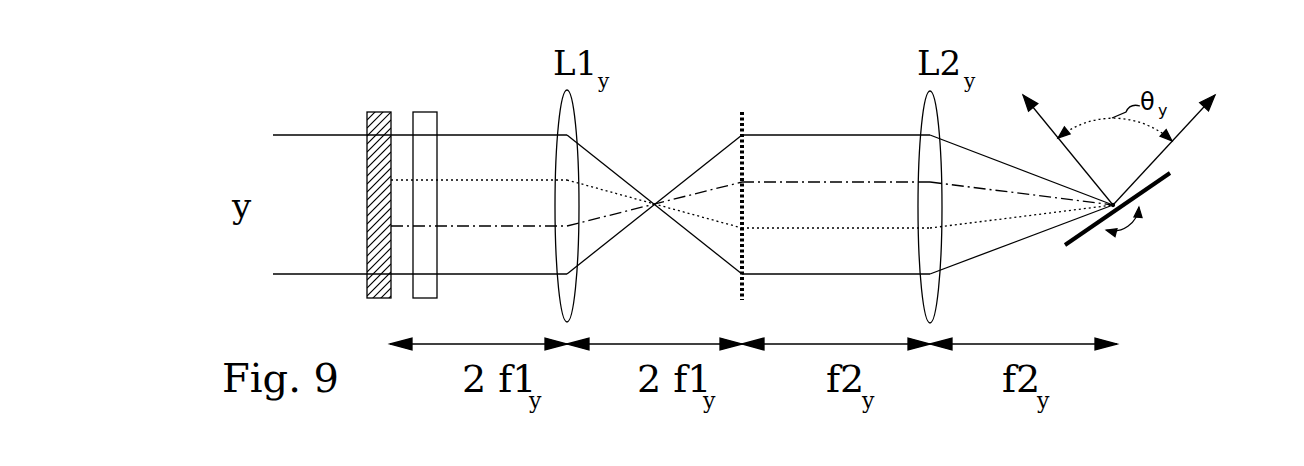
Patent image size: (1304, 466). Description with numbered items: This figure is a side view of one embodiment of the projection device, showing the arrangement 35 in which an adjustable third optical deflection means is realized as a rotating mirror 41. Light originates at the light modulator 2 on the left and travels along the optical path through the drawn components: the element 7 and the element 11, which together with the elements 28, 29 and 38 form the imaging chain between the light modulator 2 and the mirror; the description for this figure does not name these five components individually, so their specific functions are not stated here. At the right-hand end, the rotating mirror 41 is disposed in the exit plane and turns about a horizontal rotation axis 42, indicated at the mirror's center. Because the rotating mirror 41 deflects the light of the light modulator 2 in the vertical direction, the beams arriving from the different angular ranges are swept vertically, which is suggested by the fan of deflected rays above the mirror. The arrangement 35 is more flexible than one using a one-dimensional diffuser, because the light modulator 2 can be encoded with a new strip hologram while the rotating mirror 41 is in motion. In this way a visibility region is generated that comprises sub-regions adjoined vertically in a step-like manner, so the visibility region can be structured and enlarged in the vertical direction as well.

The light modulator 2 is at (370, 120).
The first lens L1 7 is at (566, 300).
The optical plate 11 is at (432, 120).
The grating / diffuser 28 is at (745, 123).
The light beam 29 is at (316, 137).
The arrangement 35 is at (1107, 103).
The second lens L2 38 is at (932, 118).
The rotating mirror 41 is at (1172, 178).
The horizontal rotation axis 42 is at (1115, 202).